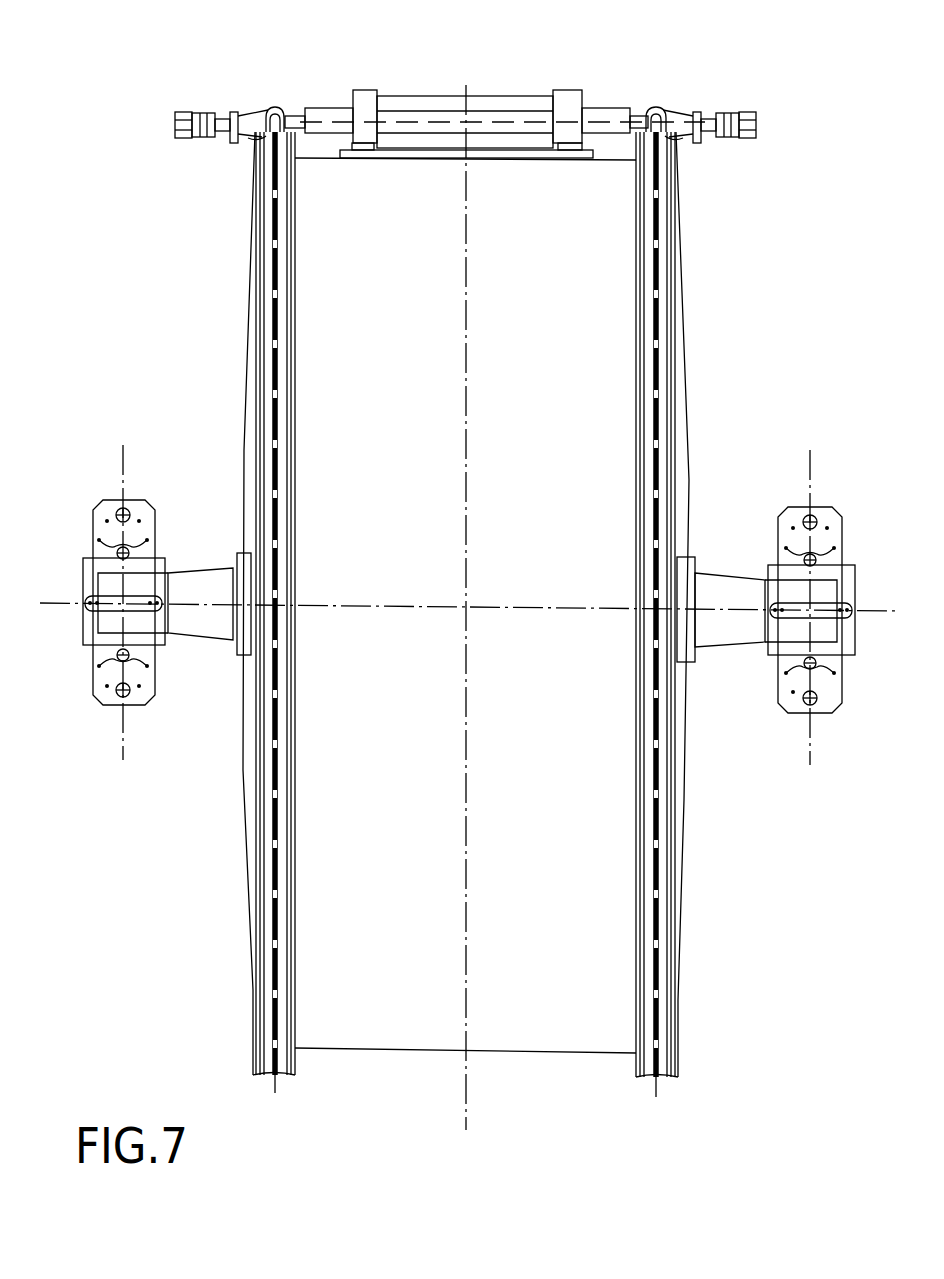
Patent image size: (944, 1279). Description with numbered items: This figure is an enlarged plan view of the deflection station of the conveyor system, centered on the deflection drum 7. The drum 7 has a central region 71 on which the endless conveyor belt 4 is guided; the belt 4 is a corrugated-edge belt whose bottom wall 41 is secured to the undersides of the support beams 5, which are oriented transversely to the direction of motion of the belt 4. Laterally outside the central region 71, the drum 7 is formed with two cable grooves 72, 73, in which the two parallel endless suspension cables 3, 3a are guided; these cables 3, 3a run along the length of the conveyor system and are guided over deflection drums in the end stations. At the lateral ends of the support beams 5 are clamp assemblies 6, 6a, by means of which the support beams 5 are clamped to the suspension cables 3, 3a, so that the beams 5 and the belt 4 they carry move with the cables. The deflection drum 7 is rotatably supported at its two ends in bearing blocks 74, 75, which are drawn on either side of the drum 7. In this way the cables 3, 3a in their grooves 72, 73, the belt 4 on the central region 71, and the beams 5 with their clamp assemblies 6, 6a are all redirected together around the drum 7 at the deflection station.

The suspension cable 3 is at (657, 923).
The suspension cable 3a is at (270, 920).
The conveyor belt 4 is at (408, 163).
The support beam 5 is at (495, 75).
The clamp assembly 6 is at (738, 140).
The clamp assembly 6a is at (195, 137).
The deflection drum 7 is at (716, 604).
The bottom wall 41 is at (455, 79).
The central region 71 is at (588, 830).
The cable groove 72 is at (667, 1010).
The cable groove 73 is at (267, 1005).
The bearing block 74 is at (791, 607).
The bearing block 75 is at (110, 628).